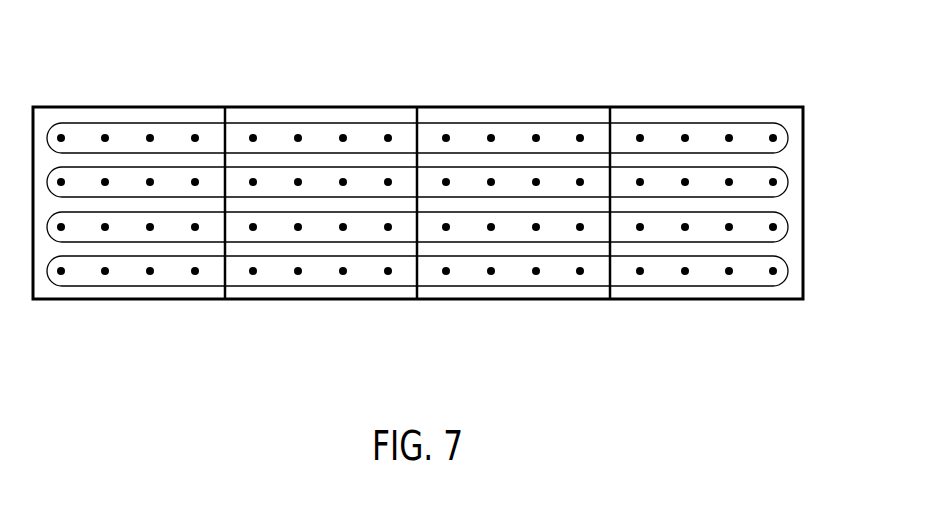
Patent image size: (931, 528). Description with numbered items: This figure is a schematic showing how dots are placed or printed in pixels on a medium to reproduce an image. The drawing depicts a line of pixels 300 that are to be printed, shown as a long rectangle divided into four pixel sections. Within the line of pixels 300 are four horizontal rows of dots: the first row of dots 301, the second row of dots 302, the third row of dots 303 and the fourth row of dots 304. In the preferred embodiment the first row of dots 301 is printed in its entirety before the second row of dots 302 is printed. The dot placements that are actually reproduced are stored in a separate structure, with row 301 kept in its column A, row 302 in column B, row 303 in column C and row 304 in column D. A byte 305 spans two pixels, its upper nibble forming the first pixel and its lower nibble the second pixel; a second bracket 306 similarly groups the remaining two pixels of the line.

The line of pixels 300 is at (816, 83).
The first row of dots 301 is at (786, 141).
The second row of dots 302 is at (786, 185).
The third row of dots 303 is at (786, 229).
The fourth row of dots 304 is at (786, 273).
The byte 305 is at (407, 130).
The second pair of column sections 306 is at (793, 130).